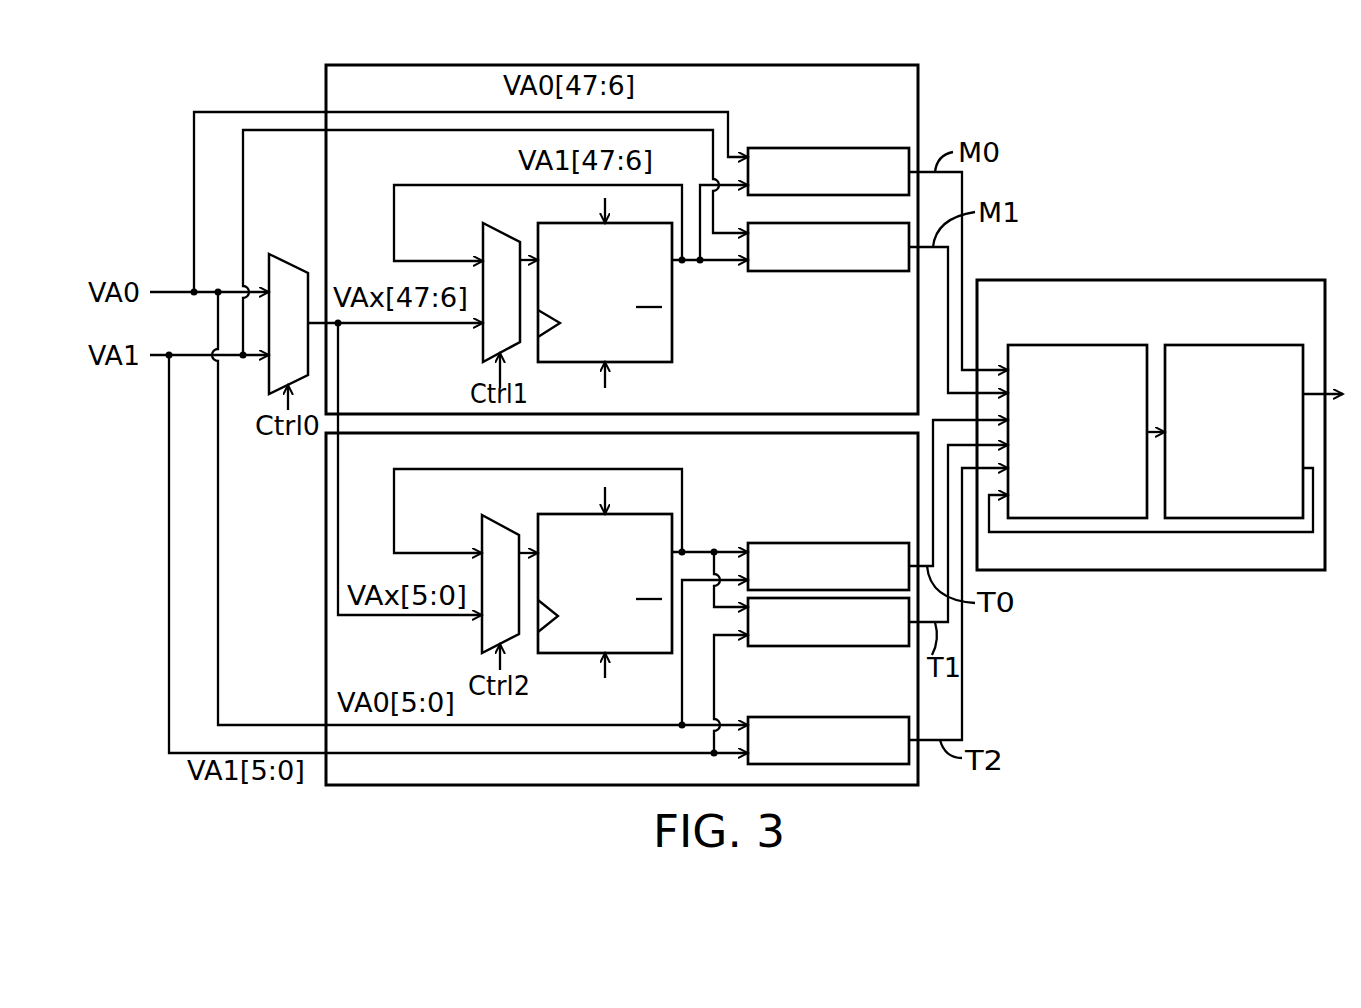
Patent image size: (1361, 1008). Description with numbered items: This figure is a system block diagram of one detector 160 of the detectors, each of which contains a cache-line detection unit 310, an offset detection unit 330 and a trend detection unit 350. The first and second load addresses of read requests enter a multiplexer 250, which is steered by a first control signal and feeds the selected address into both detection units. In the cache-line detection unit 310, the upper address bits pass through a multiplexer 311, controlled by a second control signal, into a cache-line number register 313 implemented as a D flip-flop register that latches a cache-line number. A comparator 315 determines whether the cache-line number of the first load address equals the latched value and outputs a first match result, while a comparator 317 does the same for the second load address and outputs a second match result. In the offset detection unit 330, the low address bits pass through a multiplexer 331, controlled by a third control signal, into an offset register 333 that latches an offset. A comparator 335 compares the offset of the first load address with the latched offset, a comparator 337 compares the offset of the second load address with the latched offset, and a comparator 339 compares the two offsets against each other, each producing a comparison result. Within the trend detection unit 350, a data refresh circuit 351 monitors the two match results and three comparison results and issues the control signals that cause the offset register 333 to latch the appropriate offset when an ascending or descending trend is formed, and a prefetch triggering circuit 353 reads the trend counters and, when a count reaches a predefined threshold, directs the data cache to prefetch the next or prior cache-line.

The detector 160 is at (1170, 152).
The multiplexer 250 is at (289, 254).
The cache-line detection unit 310 is at (326, 87).
The multiplexer 311 is at (483, 243).
The cache-line number register 313 is at (622, 362).
The comparator 315 is at (748, 148).
The comparator 317 is at (748, 271).
The offset detection unit 330 is at (326, 519).
The multiplexer 331 is at (482, 537).
The offset register 333 is at (642, 653).
The comparator 335 is at (748, 543).
The comparator 337 is at (748, 646).
The comparator 339 is at (748, 717).
The trend detection unit 350 is at (1150, 280).
The data refresh circuit 351 is at (1008, 345).
The prefetch triggering circuit 353 is at (1165, 345).